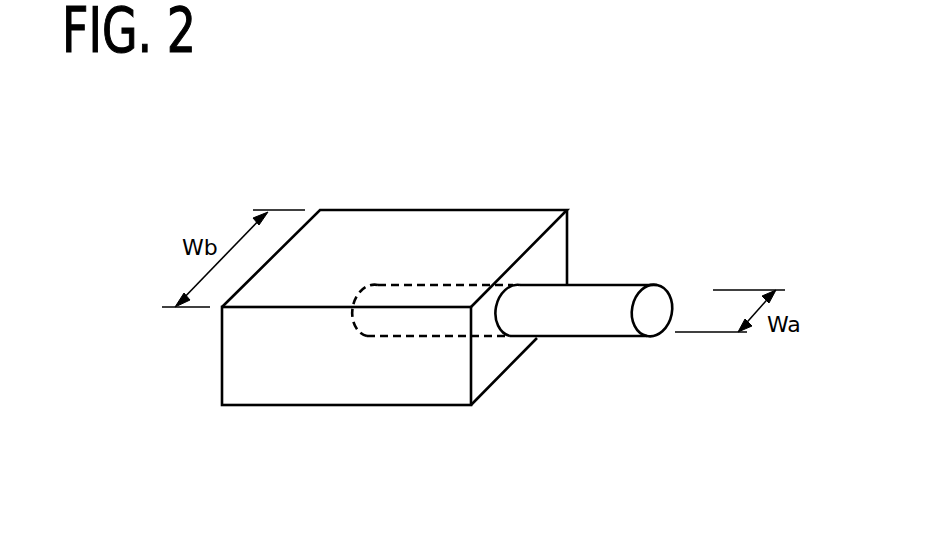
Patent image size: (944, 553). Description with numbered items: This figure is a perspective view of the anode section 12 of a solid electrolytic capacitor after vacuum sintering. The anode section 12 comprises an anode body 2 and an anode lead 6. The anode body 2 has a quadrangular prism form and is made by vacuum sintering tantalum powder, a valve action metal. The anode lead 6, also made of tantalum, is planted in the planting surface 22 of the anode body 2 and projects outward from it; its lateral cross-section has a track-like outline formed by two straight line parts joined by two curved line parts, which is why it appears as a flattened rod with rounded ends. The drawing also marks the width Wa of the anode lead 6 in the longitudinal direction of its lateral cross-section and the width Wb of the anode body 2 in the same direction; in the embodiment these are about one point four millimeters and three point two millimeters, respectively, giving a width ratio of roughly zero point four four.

The anode section 12 is at (331, 162).
The anode body 2 is at (413, 230).
The planting surface 22 is at (557, 253).
The anode lead 6 is at (608, 302).